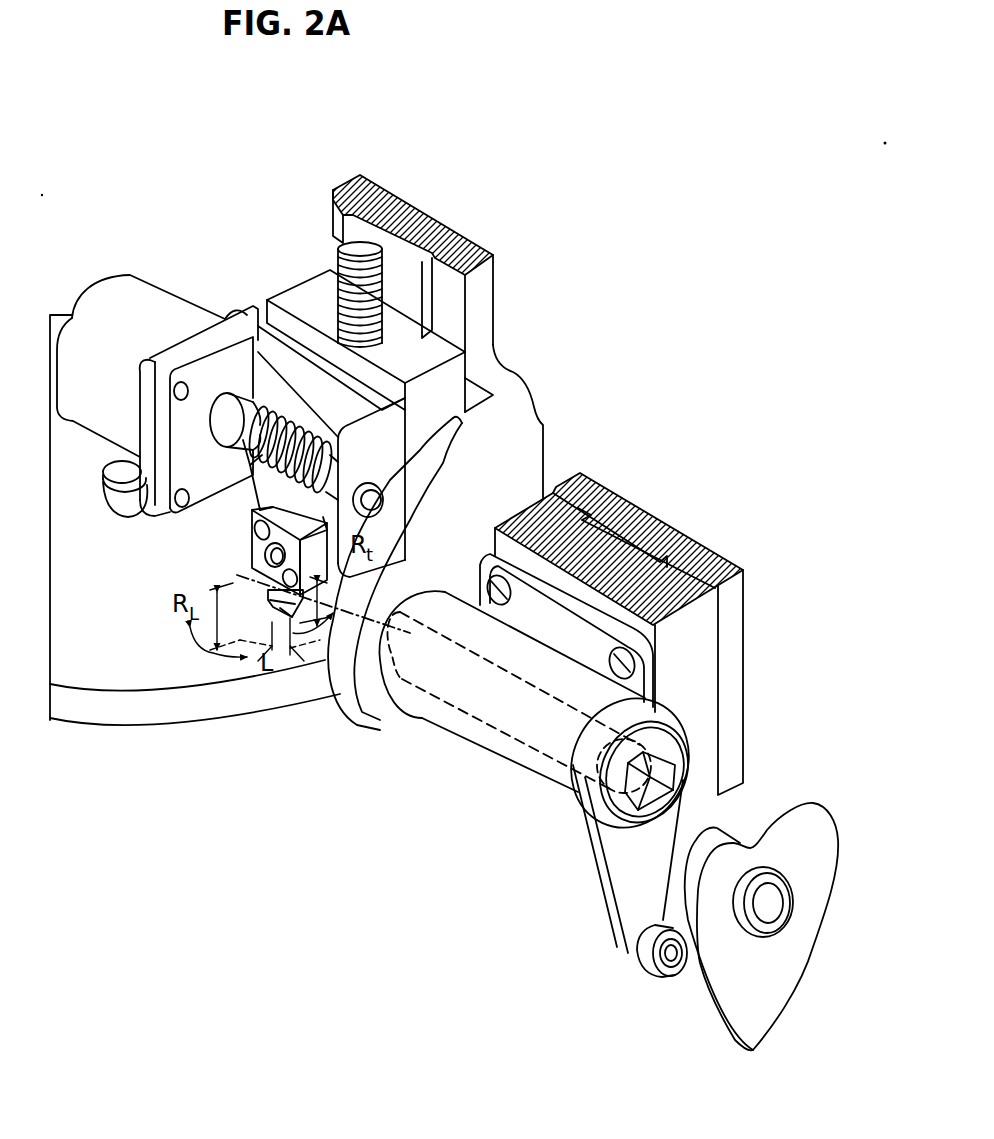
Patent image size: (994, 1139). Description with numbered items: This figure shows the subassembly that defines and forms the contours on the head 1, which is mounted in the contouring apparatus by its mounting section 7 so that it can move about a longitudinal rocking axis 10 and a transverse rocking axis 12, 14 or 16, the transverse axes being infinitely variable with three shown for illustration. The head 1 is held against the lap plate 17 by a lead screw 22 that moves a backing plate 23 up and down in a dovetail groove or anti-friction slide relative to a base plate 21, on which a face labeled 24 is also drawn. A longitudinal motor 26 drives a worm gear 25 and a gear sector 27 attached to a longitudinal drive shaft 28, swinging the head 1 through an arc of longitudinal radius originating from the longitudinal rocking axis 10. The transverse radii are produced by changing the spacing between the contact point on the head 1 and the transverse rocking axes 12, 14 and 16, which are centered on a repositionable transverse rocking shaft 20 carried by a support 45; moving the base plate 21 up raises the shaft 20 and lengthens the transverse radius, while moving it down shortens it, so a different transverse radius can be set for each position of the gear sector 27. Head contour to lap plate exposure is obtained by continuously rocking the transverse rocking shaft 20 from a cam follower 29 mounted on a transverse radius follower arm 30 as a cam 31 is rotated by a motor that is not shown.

The head 1 is at (278, 605).
The mounting section 7 is at (268, 593).
The longitudinal rocking axis 10 is at (300, 592).
The transverse rocking axis 12 is at (519, 702).
The transverse rocking axis 14 is at (519, 702).
The transverse rocking axis 16 is at (408, 638).
The lap plate 17 is at (113, 676).
The transverse rocking shaft 20 is at (544, 698).
The base plate 21 is at (523, 402).
The lead screw 22 is at (343, 296).
The backing plate 23 is at (453, 372).
The face plate 24 is at (389, 467).
The worm gear 25 is at (278, 428).
The longitudinal motor 26 is at (170, 297).
The gear sector 27 is at (263, 490).
The longitudinal drive shaft 28 is at (265, 548).
The cam follower 29 is at (648, 957).
The transverse radius follower arm 30 is at (507, 710).
The cam 31 is at (818, 892).
The support 45 is at (704, 645).